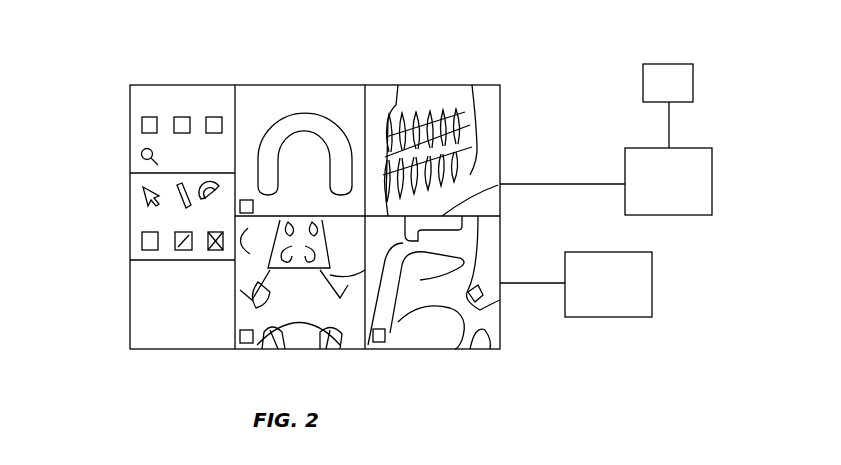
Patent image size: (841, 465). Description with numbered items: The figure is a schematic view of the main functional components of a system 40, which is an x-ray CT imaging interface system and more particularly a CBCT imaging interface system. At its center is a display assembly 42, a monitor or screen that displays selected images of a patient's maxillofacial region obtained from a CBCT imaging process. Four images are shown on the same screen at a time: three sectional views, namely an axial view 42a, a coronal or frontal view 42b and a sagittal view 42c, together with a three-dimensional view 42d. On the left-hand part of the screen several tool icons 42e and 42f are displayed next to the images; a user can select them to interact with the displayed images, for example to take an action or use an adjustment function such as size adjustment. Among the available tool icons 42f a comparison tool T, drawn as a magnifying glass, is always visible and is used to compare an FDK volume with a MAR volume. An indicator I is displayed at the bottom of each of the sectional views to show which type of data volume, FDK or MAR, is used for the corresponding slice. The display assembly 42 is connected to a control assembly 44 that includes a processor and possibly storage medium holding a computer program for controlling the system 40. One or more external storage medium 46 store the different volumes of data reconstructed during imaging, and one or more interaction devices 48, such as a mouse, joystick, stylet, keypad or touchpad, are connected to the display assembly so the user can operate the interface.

The system 40 is at (97, 32).
The display assembly 42 is at (187, 85).
The axial view 42a is at (293, 219).
The coronal or frontal view 42b is at (305, 349).
The sagittal view 42c is at (448, 349).
The 3D view 42d is at (437, 85).
The tool icons 42e is at (140, 241).
The tool icons 42f is at (140, 125).
The comparison tool or icon T is at (139, 154).
The indicator I is at (253, 207).
The control assembly 44 is at (712, 186).
The external storage medium 46 is at (693, 84).
The interaction devices 48 is at (652, 286).